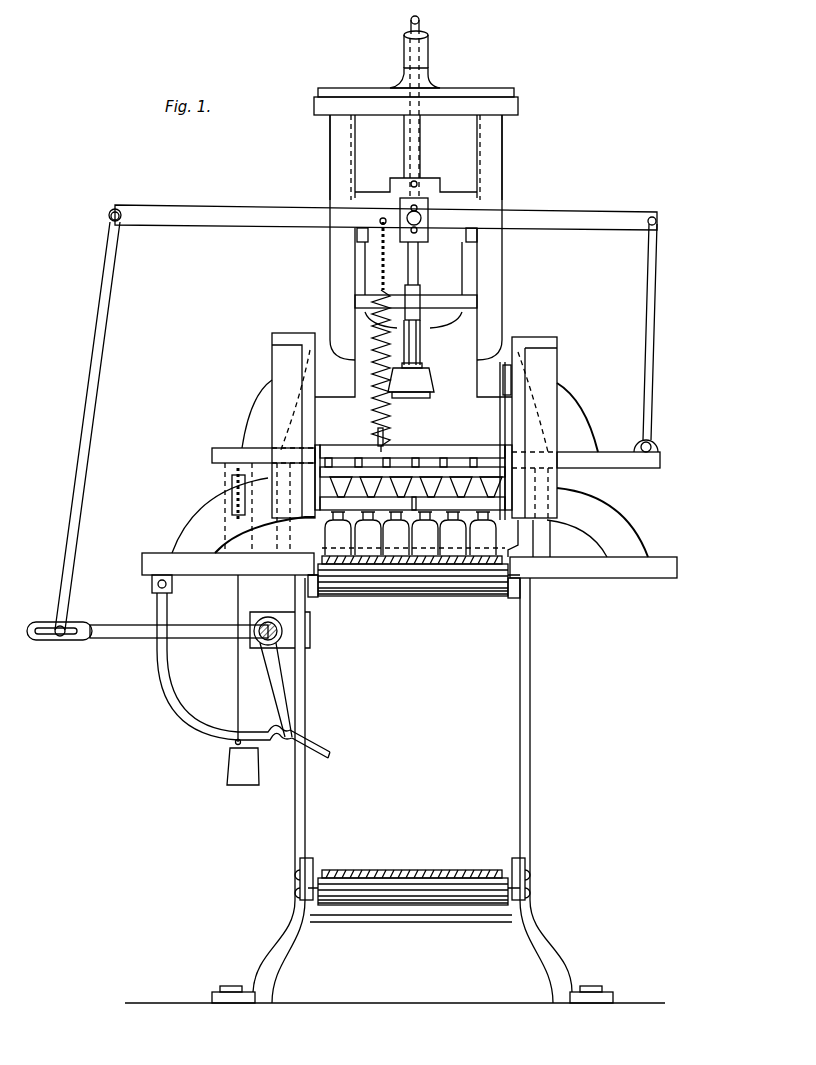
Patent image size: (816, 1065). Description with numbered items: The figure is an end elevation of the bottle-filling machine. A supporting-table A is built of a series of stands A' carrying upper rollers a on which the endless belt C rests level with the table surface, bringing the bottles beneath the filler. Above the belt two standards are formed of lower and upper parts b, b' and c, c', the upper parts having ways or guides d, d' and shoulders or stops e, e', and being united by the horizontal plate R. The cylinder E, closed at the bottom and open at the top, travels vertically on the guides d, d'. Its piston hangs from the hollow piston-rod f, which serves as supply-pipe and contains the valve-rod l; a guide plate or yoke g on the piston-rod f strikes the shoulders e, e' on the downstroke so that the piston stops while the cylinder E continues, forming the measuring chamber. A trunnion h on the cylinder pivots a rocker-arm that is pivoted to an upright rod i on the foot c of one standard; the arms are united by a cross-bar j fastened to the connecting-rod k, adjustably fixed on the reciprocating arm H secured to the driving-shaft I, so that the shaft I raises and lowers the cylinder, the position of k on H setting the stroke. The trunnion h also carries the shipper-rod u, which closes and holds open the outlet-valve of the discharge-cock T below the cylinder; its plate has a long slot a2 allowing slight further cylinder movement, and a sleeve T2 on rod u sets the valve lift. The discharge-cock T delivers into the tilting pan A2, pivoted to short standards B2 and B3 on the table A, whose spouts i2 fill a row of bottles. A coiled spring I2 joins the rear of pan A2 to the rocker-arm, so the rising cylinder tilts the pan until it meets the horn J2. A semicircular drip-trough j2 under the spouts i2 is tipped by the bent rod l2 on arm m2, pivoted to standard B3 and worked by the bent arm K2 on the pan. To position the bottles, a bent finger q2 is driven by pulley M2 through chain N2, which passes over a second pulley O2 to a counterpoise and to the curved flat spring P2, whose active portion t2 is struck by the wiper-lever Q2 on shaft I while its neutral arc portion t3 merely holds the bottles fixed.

The valve-rod l is at (422, 26).
The piston-rod f is at (428, 58).
The horizontal plate R is at (510, 112).
The upper standard part c' is at (342, 237).
The way or guide d' is at (367, 157).
The way or guide d is at (465, 157).
The upper standard part c is at (489, 237).
The guide plate or yoke g is at (416, 156).
The shipper-rod u is at (416, 192).
The cross-bar j is at (114, 207).
The upper roller a is at (384, 217).
The trunnion h is at (428, 218).
The slot or opening a2 is at (418, 232).
The shoulder or stop e' is at (346, 245).
The shoulder or stop e is at (483, 245).
The cylinder E is at (413, 285).
The sleeve T2 is at (420, 302).
The discharge-cock T is at (421, 352).
The coiled spring I2 is at (370, 335).
The short vertical arm or standard B2 is at (293, 443).
The short vertical arm or standard B3 is at (534, 428).
The connecting-rod k is at (87, 426).
The upright rod i is at (647, 338).
The bent rod l2 is at (498, 425).
The arm m2 is at (502, 380).
The horn J2 is at (376, 437).
The tilting pan A2 is at (460, 452).
The spouts i2 is at (416, 486).
The drip-trough j2 is at (412, 520).
The belt C is at (338, 565).
The supporting-table A is at (409, 565).
The lower standard part b' is at (273, 543).
The lower standard part b is at (529, 538).
The bent finger q2 is at (520, 530).
The stand A' is at (395, 789).
The reciprocating arm H is at (147, 643).
The driving-shaft I is at (262, 618).
The wiper-lever Q2 is at (280, 690).
The chain N2 is at (236, 690).
The bent arm K2 is at (243, 766).
The curved flat spring P2 is at (195, 657).
The inactive or neutral portion t3 is at (252, 724).
The active portion t2 is at (310, 741).
The pulley M2 is at (230, 480).
The pulley O2 is at (232, 492).